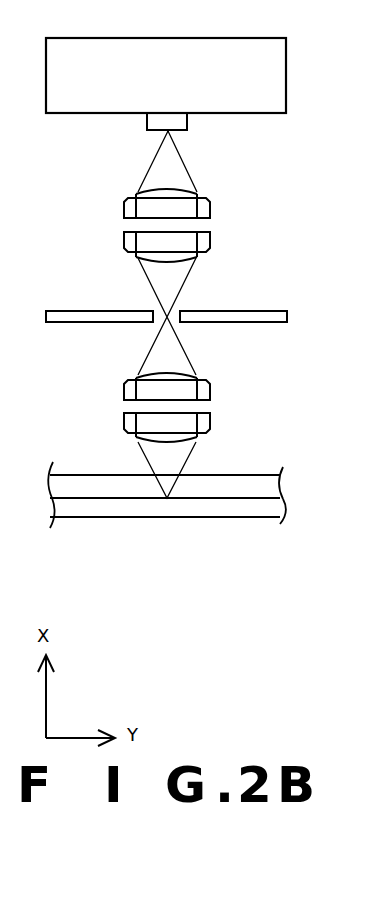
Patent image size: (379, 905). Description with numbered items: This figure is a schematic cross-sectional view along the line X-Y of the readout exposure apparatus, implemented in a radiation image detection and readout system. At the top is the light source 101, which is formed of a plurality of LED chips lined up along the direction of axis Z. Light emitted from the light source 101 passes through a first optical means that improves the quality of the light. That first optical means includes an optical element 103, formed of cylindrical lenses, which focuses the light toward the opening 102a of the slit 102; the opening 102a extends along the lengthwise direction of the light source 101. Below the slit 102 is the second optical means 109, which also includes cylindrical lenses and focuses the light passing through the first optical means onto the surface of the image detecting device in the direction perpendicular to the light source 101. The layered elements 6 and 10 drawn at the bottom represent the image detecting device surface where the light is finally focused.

The light source 101 is at (286, 87).
The slit 102 is at (287, 317).
The opening 102a is at (172, 312).
The optical element 103 is at (240, 192).
The second optical means 109 is at (240, 373).
The recording layer 6 is at (267, 481).
The substrate 10 is at (257, 513).